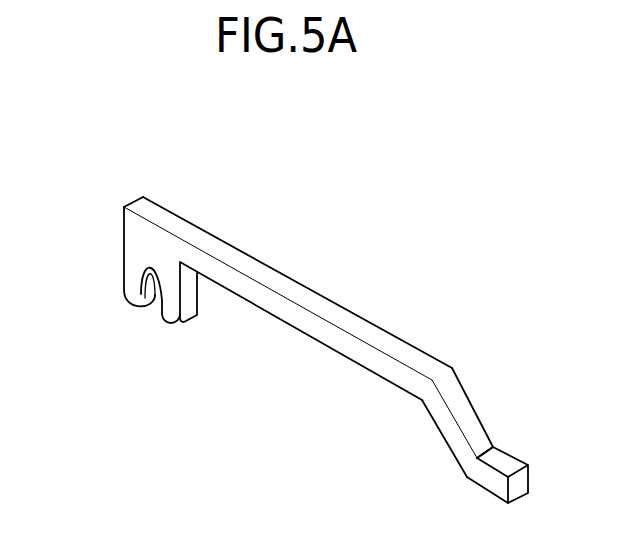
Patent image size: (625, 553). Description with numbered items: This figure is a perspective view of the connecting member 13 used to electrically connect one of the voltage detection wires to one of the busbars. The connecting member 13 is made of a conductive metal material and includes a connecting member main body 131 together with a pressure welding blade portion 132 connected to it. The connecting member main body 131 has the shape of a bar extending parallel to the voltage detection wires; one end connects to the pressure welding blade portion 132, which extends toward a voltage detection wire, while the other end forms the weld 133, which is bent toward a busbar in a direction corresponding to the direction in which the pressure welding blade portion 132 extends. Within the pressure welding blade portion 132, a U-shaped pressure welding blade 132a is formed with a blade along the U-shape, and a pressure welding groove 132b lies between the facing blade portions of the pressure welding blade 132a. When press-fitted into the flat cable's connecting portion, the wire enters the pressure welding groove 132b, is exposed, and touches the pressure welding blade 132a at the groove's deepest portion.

The connecting member 13 is at (350, 243).
The connecting member main body 131 is at (241, 284).
The pressure welding blade portion 132 is at (144, 197).
The pressure welding blade 132a is at (153, 293).
The pressure welding groove 132b is at (155, 308).
The weld 133 is at (498, 477).